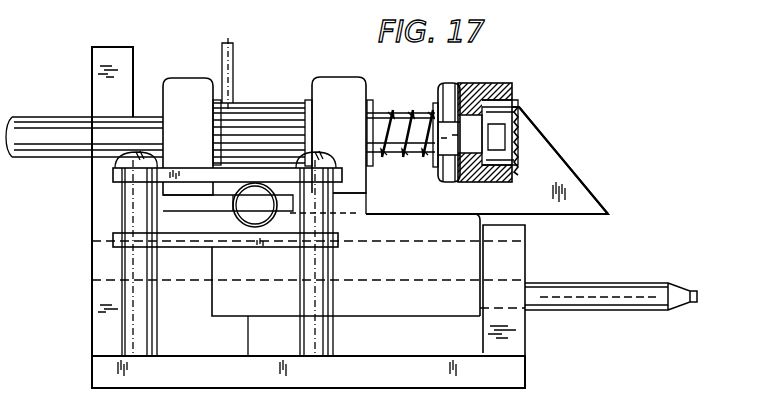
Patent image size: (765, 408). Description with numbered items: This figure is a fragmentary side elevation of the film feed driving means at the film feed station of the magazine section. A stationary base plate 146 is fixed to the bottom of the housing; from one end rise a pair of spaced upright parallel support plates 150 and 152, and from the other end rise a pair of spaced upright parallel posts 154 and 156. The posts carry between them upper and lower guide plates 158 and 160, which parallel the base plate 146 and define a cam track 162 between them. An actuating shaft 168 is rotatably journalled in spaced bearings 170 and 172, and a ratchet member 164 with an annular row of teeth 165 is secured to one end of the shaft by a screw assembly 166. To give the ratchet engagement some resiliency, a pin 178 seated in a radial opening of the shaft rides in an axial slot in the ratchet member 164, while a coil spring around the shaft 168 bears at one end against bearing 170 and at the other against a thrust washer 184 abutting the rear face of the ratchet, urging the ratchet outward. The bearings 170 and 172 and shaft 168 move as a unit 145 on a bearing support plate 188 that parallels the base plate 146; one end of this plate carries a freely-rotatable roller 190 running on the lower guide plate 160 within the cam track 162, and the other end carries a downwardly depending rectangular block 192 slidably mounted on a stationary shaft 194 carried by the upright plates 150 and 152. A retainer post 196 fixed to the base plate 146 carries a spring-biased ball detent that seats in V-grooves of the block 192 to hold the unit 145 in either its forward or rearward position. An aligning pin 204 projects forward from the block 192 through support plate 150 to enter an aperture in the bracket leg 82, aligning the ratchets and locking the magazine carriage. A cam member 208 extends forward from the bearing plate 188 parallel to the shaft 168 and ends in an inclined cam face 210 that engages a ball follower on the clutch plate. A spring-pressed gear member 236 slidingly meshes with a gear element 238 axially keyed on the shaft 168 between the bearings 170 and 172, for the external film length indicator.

The bracket leg 82 is at (398, 158).
The bearing-shaft unit 145 is at (198, 70).
The base plate 146 is at (100, 365).
The upright support plate 150 is at (515, 232).
The upright support plate 152 is at (102, 78).
The upright post 154 is at (126, 200).
The upright post 156 is at (338, 332).
The upper guide plate 158 is at (195, 164).
The lower guide plate 160 is at (339, 240).
The cam track 162 is at (288, 234).
The ratchet member 164 is at (482, 90).
The teeth 165 is at (518, 90).
The screw assembly 166 is at (518, 104).
The actuating shaft 168 is at (51, 118).
The bearing 170 is at (368, 68).
The bearing 172 is at (180, 86).
The pin 178 is at (448, 182).
The thrust washer 184 is at (436, 104).
The bearing support plate 188 is at (368, 198).
The roller 190 is at (236, 206).
The block 192 is at (222, 300).
The stationary shaft 194 is at (103, 279).
The post 196 is at (255, 340).
The aligning pin 204 is at (616, 282).
The cam member 208 is at (571, 173).
The inclined cam face 210 is at (593, 180).
The gear member 236 is at (250, 30).
The gear element 238 is at (292, 78).